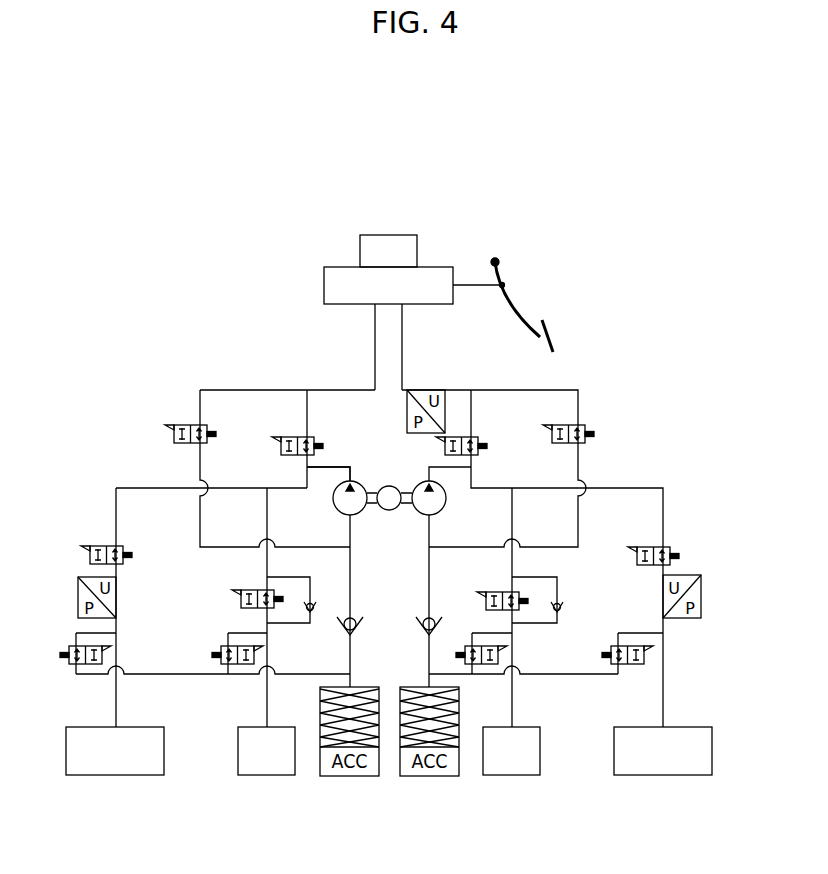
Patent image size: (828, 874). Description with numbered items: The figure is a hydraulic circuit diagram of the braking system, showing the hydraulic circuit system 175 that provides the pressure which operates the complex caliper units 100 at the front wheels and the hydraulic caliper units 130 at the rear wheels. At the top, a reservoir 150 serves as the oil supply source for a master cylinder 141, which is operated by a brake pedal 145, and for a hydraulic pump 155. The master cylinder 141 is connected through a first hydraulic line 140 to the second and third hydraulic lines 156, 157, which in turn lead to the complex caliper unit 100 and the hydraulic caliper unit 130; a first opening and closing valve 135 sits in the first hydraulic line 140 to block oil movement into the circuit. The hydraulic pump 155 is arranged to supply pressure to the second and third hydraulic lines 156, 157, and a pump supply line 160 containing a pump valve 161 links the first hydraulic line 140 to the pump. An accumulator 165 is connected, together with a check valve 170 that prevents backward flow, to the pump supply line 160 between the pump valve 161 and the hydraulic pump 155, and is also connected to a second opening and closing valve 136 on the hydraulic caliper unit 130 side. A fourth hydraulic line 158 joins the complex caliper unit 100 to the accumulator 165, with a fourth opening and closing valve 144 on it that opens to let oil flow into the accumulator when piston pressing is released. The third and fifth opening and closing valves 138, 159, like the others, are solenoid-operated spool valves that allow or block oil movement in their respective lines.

The complex caliper unit 100 is at (116, 777).
The hydraulic caliper unit 130 is at (267, 777).
The first opening and closing valve 135 is at (315, 437).
The second opening and closing valve 136 is at (247, 590).
The third opening and closing valve 138 is at (93, 546).
The first hydraulic line 140 is at (307, 410).
The master cylinder 141 is at (432, 305).
The fourth opening and closing valve 144 is at (222, 647).
The brake pedal 145 is at (550, 326).
The reservoir 150 is at (388, 235).
The hydraulic pump 155 is at (333, 510).
The second hydraulic line 156 is at (269, 563).
The third hydraulic line 157 is at (117, 515).
The fourth hydraulic line 158 is at (200, 676).
The fifth opening and closing valve 159 is at (60, 647).
The pump supply line 160 is at (333, 466).
The pump valve 161 is at (178, 425).
The accumulator 165 is at (350, 777).
The check valve 170 is at (357, 630).
The hydraulic circuit system 175 is at (607, 402).